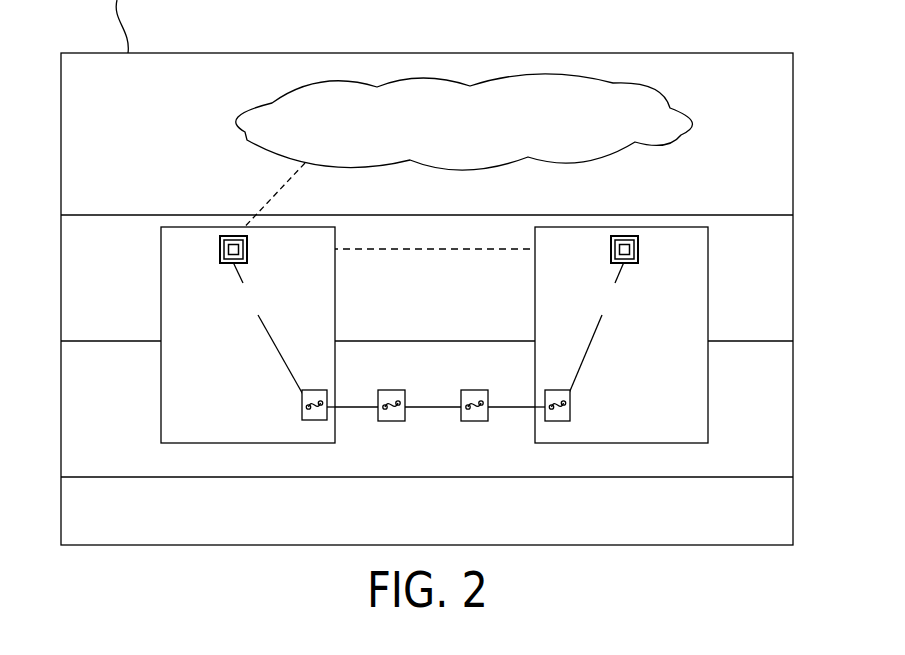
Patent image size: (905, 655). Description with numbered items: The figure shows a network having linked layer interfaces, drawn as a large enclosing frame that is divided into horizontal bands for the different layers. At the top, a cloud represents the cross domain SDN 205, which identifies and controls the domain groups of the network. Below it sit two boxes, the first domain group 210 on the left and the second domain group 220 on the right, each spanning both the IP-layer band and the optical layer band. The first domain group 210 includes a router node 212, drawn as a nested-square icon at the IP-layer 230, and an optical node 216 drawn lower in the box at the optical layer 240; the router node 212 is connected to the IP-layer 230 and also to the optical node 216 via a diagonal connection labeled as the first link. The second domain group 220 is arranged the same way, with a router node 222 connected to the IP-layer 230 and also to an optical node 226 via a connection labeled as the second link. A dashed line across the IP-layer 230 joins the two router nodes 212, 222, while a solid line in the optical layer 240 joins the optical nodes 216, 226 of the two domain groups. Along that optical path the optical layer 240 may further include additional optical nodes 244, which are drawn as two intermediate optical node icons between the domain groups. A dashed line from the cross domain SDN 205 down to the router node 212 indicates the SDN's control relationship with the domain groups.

The cross domain SDN 205 is at (614, 82).
The domain group 1 210 is at (164, 226).
The router node 212 is at (220, 250).
The optical node 216 is at (312, 421).
The domain group 2 220 is at (709, 298).
The router node 222 is at (628, 236).
The optical node 226 is at (563, 421).
The IP-layer 230 is at (450, 249).
The optical layer 240 is at (511, 408).
The optical nodes 244 is at (470, 390).